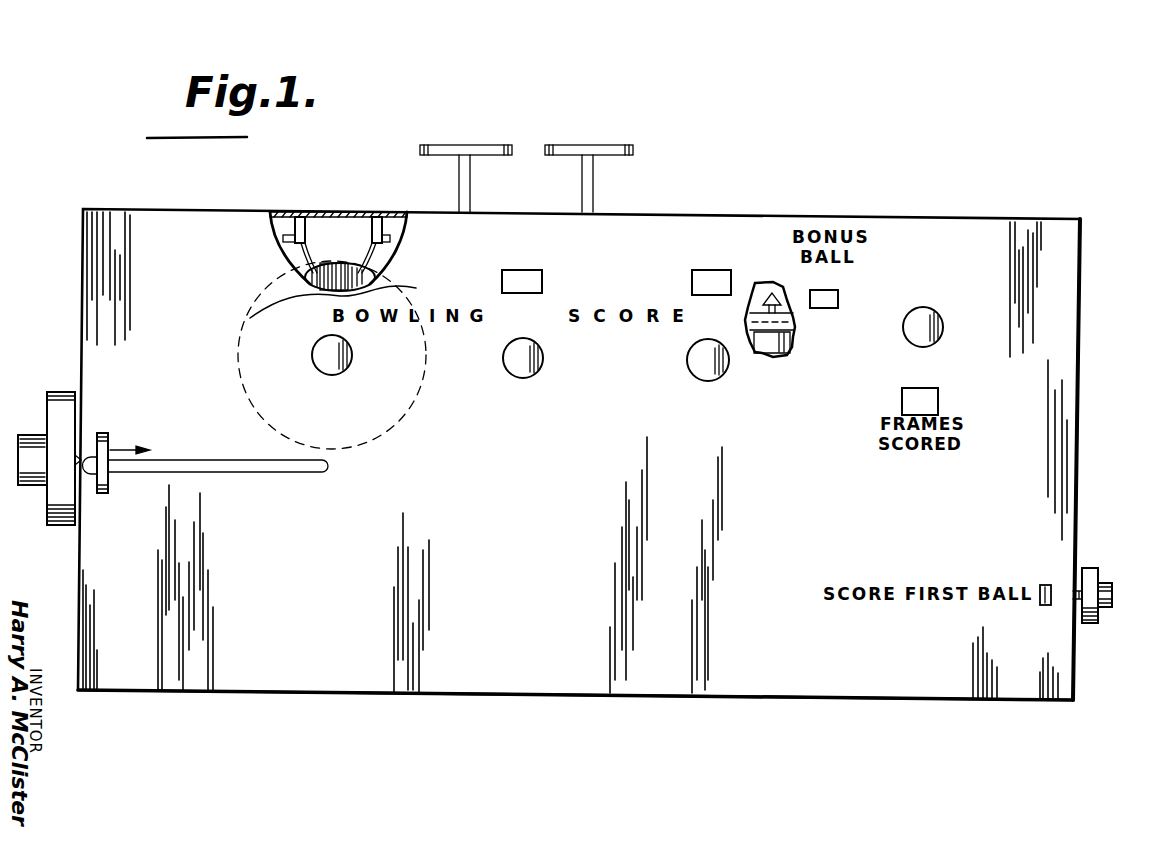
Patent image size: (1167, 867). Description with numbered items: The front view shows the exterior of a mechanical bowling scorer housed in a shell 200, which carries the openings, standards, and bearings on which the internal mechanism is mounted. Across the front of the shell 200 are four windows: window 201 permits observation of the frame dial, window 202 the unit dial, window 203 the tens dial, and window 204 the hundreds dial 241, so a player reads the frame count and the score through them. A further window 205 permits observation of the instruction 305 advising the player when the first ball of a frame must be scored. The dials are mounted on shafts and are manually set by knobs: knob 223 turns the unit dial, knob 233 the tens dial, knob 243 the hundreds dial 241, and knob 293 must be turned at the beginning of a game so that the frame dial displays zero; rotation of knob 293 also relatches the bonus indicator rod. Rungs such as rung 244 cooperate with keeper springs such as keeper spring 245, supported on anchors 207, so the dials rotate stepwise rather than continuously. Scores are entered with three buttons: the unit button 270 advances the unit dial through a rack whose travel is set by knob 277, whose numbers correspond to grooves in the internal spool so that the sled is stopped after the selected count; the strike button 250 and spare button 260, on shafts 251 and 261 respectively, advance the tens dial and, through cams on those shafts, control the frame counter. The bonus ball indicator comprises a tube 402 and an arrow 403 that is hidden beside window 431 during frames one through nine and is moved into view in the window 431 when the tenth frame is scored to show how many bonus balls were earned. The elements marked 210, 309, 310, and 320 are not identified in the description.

The shell 200 is at (1140, 210).
The window 201 is at (936, 390).
The window 202 is at (700, 270).
The window 203 is at (540, 272).
The window 204 is at (355, 295).
The window 205 is at (1046, 585).
The anchors 207 is at (285, 212).
The bonus ball indicator 210 is at (825, 276).
The knob 223 is at (700, 370).
The knob 233 is at (514, 366).
The hundreds dial 241 is at (258, 296).
The knob 243 is at (351, 350).
The rung 244 is at (303, 280).
The keeper spring 245 is at (373, 214).
The strike button 250 is at (508, 145).
The shaft 251 is at (470, 180).
The spare button 260 is at (630, 145).
The shaft 261 is at (593, 180).
The unit button 270 is at (106, 433).
The knob 277 is at (72, 392).
The knob 293 is at (938, 315).
The instruction 305 is at (1045, 605).
The knob 309 is at (1143, 648).
The score dial 310 is at (1077, 597).
The knob 320 is at (1112, 590).
The tube 402 is at (780, 357).
The arrow 403 is at (770, 284).
The window 431 is at (826, 308).